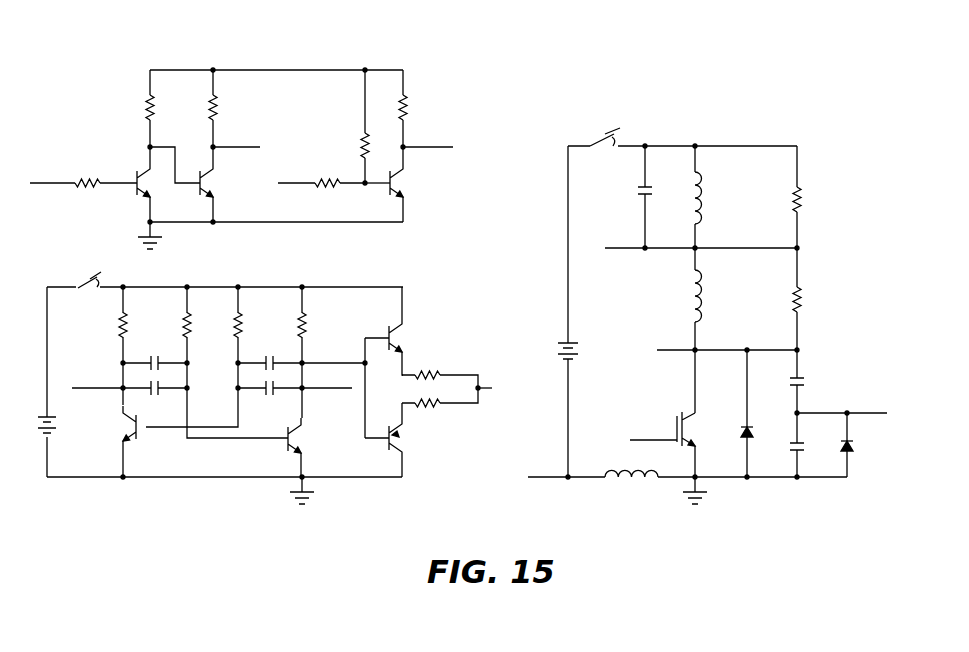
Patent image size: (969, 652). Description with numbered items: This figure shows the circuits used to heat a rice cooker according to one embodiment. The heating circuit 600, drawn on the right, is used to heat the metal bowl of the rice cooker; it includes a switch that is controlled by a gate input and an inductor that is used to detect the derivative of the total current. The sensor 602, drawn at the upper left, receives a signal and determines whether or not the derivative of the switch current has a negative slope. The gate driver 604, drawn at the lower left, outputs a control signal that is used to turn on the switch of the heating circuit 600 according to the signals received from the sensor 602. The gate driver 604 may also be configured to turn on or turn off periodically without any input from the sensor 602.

The heating circuit 600 is at (697, 126).
The sensor 602 is at (338, 51).
The gate driver 604 is at (348, 277).